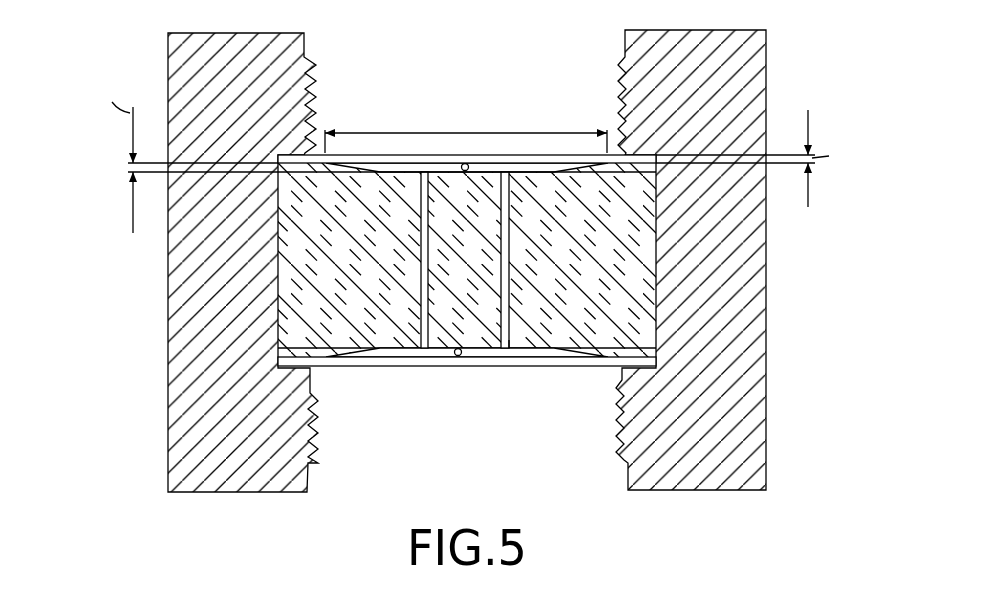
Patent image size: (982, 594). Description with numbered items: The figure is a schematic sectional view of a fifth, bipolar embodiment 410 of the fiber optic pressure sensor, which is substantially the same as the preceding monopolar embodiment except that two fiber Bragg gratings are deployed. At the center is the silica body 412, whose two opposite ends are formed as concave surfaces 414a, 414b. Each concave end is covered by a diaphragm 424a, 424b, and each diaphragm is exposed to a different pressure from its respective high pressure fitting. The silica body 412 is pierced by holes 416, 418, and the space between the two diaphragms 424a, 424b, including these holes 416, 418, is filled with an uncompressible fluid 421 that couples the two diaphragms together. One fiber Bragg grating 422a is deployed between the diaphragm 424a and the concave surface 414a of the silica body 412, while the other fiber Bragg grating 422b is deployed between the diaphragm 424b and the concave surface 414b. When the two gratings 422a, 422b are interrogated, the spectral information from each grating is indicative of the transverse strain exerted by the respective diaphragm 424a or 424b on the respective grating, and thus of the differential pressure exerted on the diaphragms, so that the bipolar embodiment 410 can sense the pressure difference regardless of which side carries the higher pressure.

The fifth bipolar embodiment 410 is at (467, 298).
The silica body 412 is at (655, 260).
The concave surface 414a is at (565, 166).
The concave surface 414b is at (405, 357).
The hole 416 is at (423, 310).
The hole 418 is at (510, 310).
The uncompressible fluid 421 is at (513, 350).
The fiber Bragg grating (FBG) 422a is at (466, 171).
The fiber Bragg grating (FBG) 422b is at (460, 356).
The diaphragm 424a is at (657, 152).
The diaphragm 424b is at (660, 378).